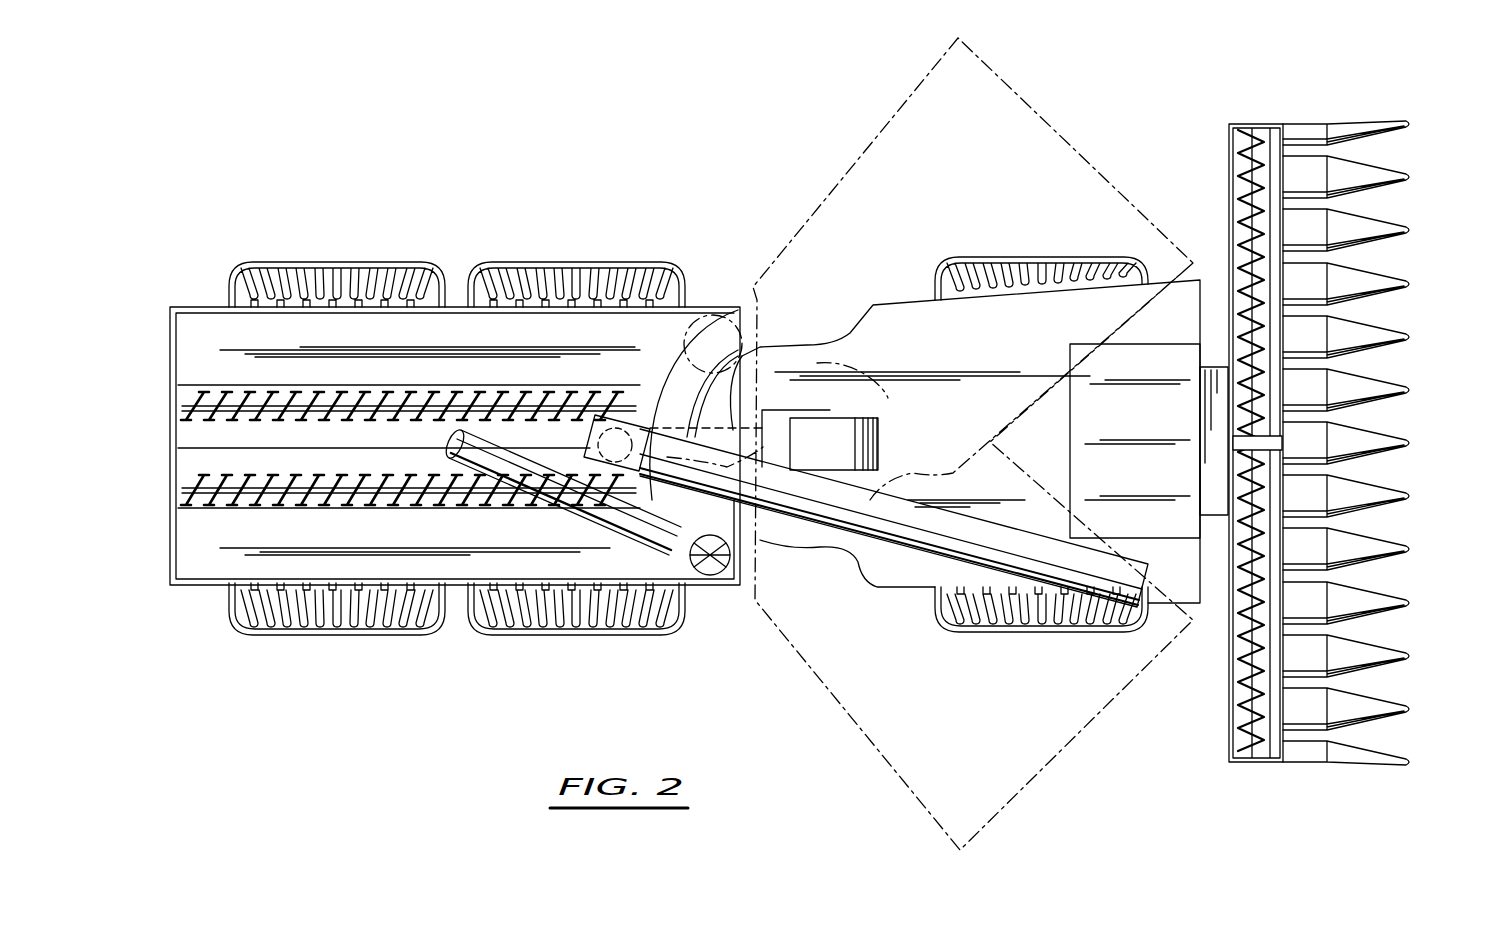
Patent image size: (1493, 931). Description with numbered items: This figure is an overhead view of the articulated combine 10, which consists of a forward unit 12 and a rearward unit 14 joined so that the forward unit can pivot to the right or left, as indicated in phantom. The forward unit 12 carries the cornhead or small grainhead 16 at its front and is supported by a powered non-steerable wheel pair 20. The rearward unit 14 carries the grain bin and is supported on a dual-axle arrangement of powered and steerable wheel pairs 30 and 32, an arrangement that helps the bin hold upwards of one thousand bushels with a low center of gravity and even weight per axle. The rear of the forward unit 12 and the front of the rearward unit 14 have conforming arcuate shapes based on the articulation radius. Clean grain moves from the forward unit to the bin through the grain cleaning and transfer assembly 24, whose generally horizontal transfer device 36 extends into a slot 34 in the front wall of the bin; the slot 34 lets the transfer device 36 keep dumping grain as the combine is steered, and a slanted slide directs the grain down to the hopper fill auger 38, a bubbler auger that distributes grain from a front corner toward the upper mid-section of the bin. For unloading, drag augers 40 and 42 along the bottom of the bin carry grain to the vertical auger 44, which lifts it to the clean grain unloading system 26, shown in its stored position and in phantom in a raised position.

The combine 10 is at (711, 144).
The forward unit 12 is at (907, 300).
The rearward unit 14 is at (205, 307).
The cornhead or small grainhead 16 is at (1410, 437).
The powered non-steerable wheel pair 20 is at (1047, 628).
The grain cleaning and transfer assembly 24 is at (843, 417).
The clean grain unloading system 26 is at (912, 546).
The powered and steerable wheel pair 30 is at (580, 630).
The powered and steerable wheel pair 32 is at (335, 268).
The slot 34 is at (698, 370).
The horizontal transfer device 36 is at (750, 420).
The hopper fill auger 38 is at (567, 513).
The unload or drag auger 40 is at (200, 415).
The unload or drag auger 42 is at (195, 478).
The vertical auger 44 is at (637, 420).